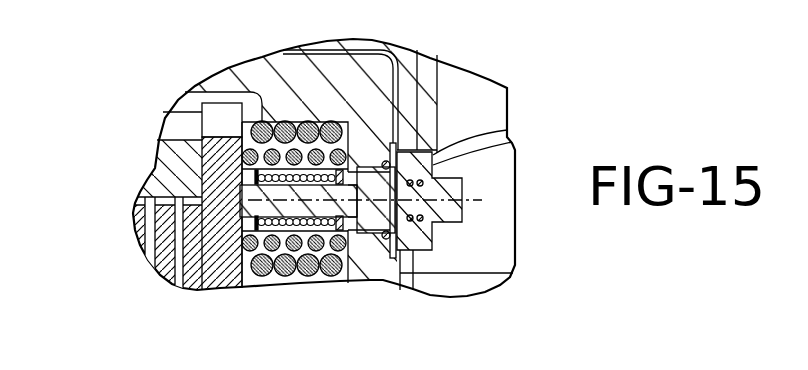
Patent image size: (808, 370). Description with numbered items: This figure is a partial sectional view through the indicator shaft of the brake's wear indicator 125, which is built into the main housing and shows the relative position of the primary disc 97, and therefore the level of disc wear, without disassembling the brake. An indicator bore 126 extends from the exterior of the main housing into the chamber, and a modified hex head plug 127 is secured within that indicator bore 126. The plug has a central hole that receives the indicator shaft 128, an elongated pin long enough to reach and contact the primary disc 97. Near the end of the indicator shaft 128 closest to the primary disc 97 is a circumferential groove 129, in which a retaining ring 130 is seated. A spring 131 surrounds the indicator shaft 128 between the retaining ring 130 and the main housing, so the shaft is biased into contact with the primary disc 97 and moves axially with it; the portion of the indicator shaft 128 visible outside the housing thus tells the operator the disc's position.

The primary disc 97 is at (221, 130).
The wear indicator 125 is at (365, 138).
The indicator bore 126 is at (395, 165).
The modified hex head plug 127 is at (423, 243).
The indicator shaft 128 is at (400, 178).
The circumferential groove 129 is at (240, 200).
The retaining ring 130 is at (245, 222).
The spring 131 is at (290, 225).